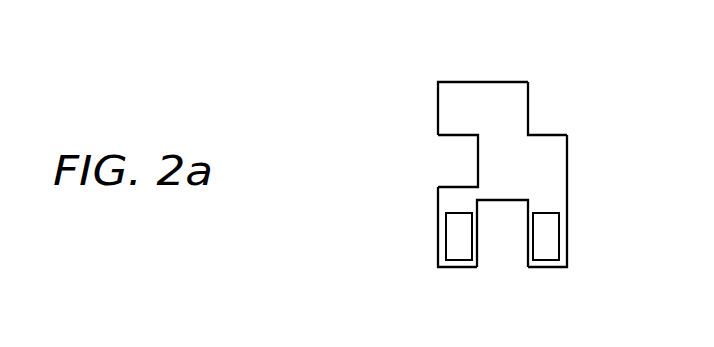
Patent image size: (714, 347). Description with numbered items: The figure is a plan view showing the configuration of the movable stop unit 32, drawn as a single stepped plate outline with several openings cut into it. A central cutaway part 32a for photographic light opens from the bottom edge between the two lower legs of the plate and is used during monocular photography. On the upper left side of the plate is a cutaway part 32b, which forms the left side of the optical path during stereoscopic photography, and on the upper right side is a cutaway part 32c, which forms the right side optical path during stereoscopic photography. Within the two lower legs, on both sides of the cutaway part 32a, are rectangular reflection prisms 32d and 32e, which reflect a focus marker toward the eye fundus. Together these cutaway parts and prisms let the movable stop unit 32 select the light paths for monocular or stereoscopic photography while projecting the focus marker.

The movable stop unit 32 is at (463, 82).
The cutaway part for photographic light during monocular photography 32a is at (502, 200).
The cutaway part for the left side of the optical path during stereoscopic photograp 32b is at (478, 165).
The cutaway part for the right side optical path during stereoscopic photography 32c is at (530, 110).
The reflection prism 32d is at (460, 248).
The reflection prism 32e is at (553, 237).